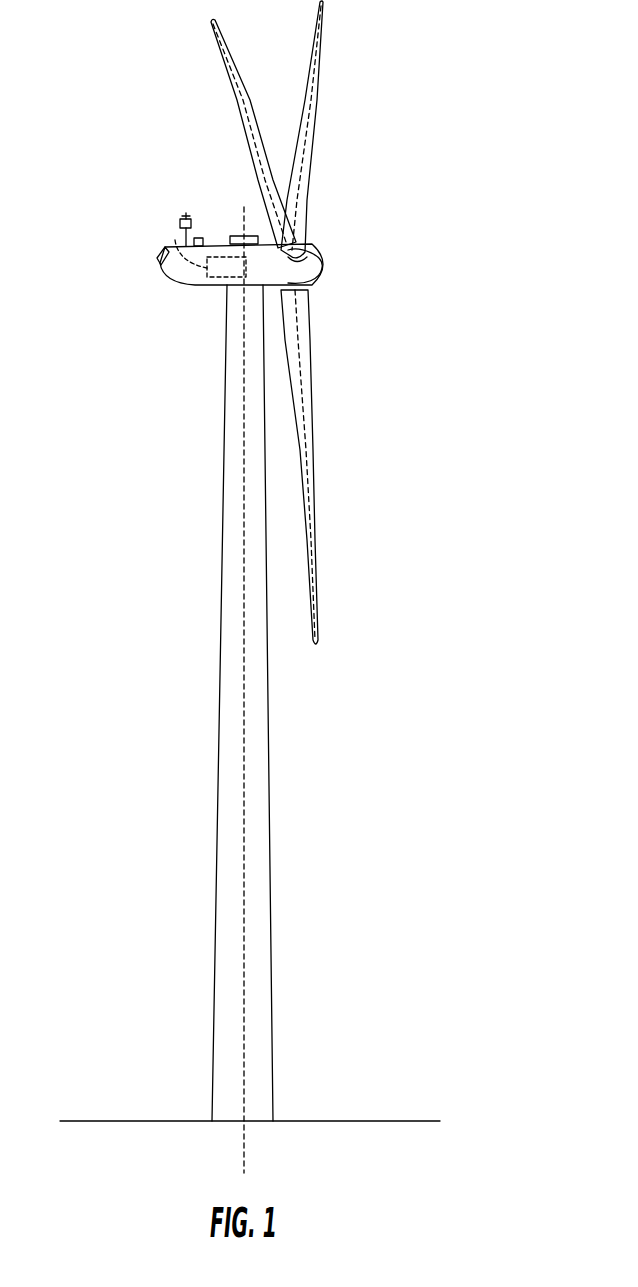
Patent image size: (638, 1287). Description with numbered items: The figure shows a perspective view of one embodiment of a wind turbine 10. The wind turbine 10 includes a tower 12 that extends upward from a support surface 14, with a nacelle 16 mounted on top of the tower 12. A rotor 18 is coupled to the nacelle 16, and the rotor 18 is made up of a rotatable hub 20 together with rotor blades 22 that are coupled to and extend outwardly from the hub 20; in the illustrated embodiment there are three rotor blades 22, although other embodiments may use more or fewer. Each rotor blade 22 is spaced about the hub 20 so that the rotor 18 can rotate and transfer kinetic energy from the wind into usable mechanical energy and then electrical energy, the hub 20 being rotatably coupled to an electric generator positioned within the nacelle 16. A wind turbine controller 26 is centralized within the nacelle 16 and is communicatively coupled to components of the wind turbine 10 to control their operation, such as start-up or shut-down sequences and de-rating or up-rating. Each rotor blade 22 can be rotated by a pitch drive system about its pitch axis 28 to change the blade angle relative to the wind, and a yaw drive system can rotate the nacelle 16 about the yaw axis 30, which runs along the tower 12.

The wind turbine 10 is at (417, 81).
The tower 12 is at (228, 817).
The support surface 14 is at (137, 1120).
The nacelle 16 is at (200, 287).
The rotor 18 is at (327, 240).
The rotatable hub 20 is at (318, 268).
The rotor blade 22 is at (305, 117).
The wind turbine controller 26 is at (175, 240).
The pitch axis 28 is at (228, 88).
The yaw axis 30 is at (243, 565).